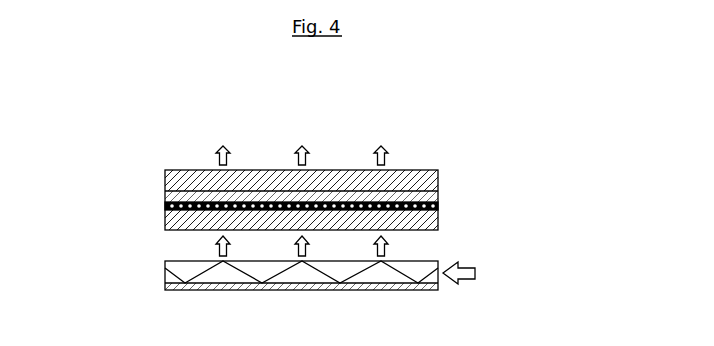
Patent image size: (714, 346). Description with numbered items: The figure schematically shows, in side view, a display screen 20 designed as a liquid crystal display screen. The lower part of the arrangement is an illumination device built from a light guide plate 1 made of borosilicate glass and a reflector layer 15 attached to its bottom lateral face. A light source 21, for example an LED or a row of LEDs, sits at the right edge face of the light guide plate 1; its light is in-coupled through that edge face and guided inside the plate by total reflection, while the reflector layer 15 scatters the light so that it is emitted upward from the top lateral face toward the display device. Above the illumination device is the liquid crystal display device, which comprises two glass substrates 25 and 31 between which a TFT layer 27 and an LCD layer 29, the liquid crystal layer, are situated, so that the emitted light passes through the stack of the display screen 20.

The light guide plate 1 is at (259, 283).
The reflector layer 15 is at (165, 267).
The display screen 20 is at (336, 184).
The light source 21 is at (478, 275).
The substrate 25 is at (165, 220).
The TFT layer 27 is at (165, 206).
The LCD layer 29 is at (165, 196).
The substrate 31 is at (165, 180).